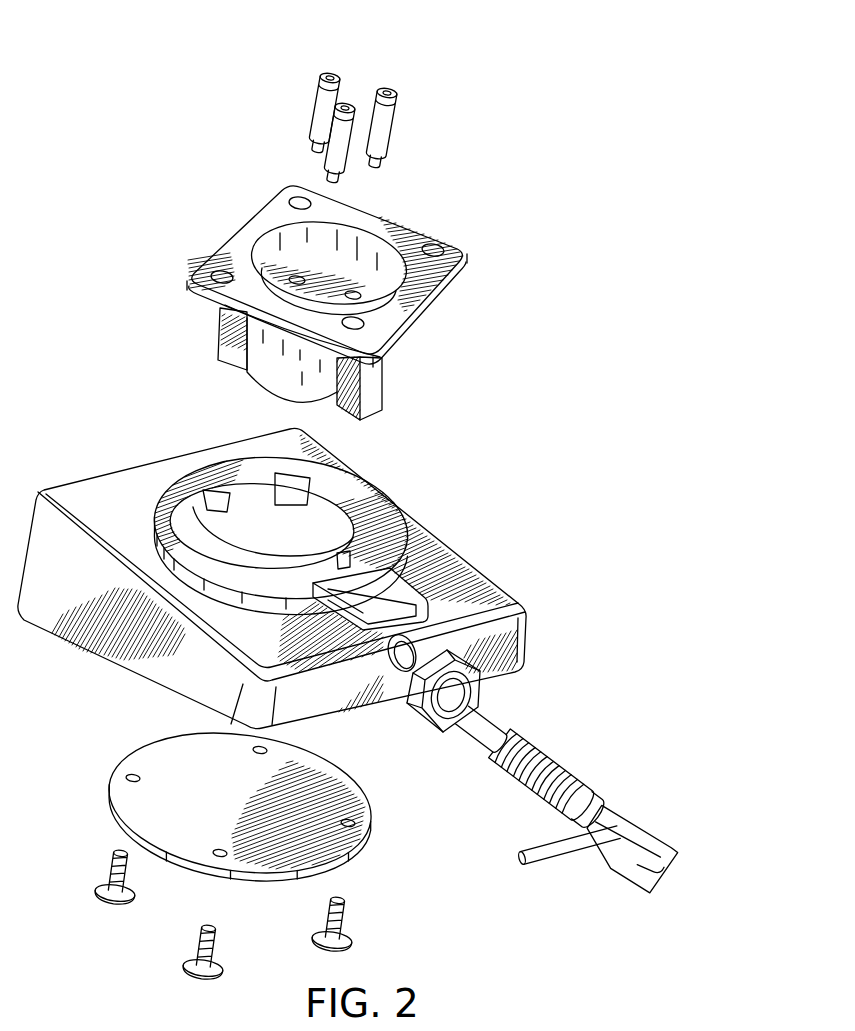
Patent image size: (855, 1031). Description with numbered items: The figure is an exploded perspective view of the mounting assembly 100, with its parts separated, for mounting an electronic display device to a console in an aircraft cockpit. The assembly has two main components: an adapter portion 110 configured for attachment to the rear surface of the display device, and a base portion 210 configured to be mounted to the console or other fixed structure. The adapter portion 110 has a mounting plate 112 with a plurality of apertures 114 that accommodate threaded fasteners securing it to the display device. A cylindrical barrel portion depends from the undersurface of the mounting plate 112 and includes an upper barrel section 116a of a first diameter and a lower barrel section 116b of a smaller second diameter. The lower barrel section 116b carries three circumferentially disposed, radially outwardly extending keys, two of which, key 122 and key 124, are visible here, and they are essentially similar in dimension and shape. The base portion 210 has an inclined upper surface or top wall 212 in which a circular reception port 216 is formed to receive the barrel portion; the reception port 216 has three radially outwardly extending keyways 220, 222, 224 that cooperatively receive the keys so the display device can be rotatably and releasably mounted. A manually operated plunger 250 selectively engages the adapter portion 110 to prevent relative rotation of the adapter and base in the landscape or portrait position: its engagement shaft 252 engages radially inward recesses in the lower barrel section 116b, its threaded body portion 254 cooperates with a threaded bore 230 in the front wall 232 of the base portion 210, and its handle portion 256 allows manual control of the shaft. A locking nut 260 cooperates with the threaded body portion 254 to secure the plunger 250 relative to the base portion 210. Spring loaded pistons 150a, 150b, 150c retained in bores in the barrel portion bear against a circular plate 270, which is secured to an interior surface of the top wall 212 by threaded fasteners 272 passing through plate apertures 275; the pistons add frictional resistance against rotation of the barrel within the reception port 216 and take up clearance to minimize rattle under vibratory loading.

The mounting assembly 100 is at (565, 373).
The adapter portion 110 is at (440, 213).
The mounting plate 112 is at (452, 268).
The apertures 114 is at (222, 277).
The upper barrel section 116a is at (413, 340).
The lower barrel section 116b is at (250, 364).
The key 122 is at (372, 393).
The key 124 is at (232, 338).
The spring loaded piston 150a is at (312, 107).
The spring loaded piston 150b is at (398, 123).
The spring loaded piston 150c is at (350, 100).
The base portion 210 is at (527, 591).
The top wall 212 is at (62, 495).
The reception port 216 is at (338, 510).
The keyway 220 is at (290, 478).
The keyway 222 is at (345, 560).
The keyway 224 is at (195, 503).
The threaded bore 230 is at (398, 672).
The front wall 232 is at (300, 708).
The plunger 250 is at (611, 771).
The engagement shaft 252 is at (505, 718).
The threaded body portion 254 is at (513, 782).
The handle portion 256 is at (570, 856).
The locking nut 260 is at (483, 692).
The circular plate 270 is at (140, 748).
The threaded fasteners 272 is at (187, 967).
The plate apertures 275 is at (352, 828).